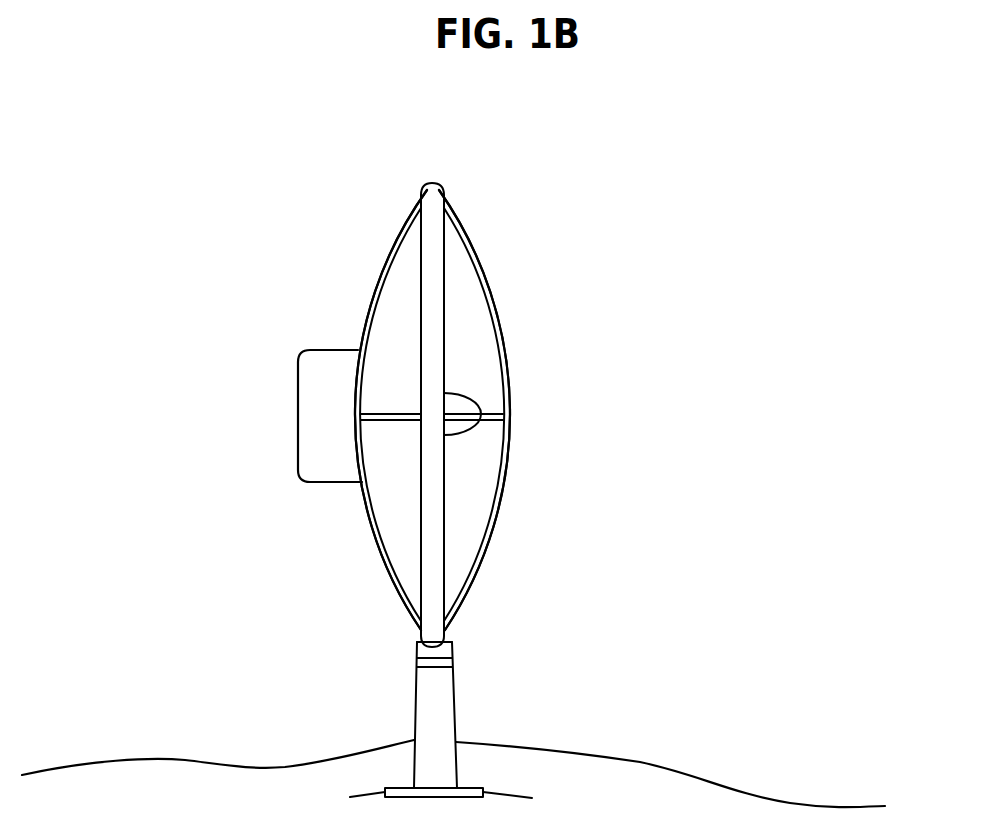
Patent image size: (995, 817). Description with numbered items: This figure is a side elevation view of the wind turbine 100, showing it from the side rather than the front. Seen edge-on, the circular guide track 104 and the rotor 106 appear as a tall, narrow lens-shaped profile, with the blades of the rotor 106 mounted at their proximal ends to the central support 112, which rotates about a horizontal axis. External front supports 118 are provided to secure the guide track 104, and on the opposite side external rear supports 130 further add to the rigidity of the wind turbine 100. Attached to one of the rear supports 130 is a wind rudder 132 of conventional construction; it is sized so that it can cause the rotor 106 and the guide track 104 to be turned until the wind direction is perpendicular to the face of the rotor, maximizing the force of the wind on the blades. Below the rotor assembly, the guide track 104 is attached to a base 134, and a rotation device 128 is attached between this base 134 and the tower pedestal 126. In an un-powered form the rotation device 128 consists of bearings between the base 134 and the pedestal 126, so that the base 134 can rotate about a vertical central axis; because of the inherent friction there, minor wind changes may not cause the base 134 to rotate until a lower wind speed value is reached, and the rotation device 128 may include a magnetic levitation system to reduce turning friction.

The wind turbine 100 is at (657, 233).
The guide track 104 is at (435, 182).
The rotor 106 is at (487, 265).
The central support 112 is at (463, 397).
The external front supports 118 is at (497, 308).
The tower pedestal 126 is at (453, 708).
The rotation device 128 is at (452, 662).
The external rear supports 130 is at (372, 527).
The wind rudder 132 is at (320, 348).
The base 134 is at (418, 643).